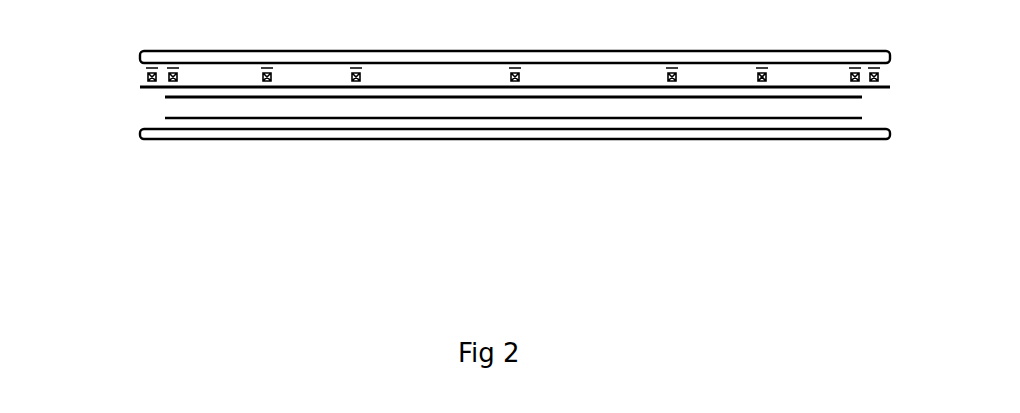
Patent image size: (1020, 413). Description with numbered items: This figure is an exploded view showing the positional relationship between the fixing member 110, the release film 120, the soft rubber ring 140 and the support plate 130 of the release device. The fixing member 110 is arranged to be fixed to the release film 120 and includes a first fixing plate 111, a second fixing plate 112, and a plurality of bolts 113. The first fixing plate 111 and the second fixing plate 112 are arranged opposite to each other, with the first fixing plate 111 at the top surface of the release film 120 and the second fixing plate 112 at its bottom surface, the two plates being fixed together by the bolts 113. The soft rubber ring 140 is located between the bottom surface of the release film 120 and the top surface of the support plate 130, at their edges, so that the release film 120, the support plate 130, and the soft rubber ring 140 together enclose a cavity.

The fixing member 110 is at (76, 28).
The first fixing plate 111 is at (141, 51).
The second fixing plate 112 is at (141, 129).
The bolts 113 is at (147, 69).
The release film 120 is at (893, 87).
The support plate 130 is at (812, 124).
The soft rubber ring 140 is at (826, 92).